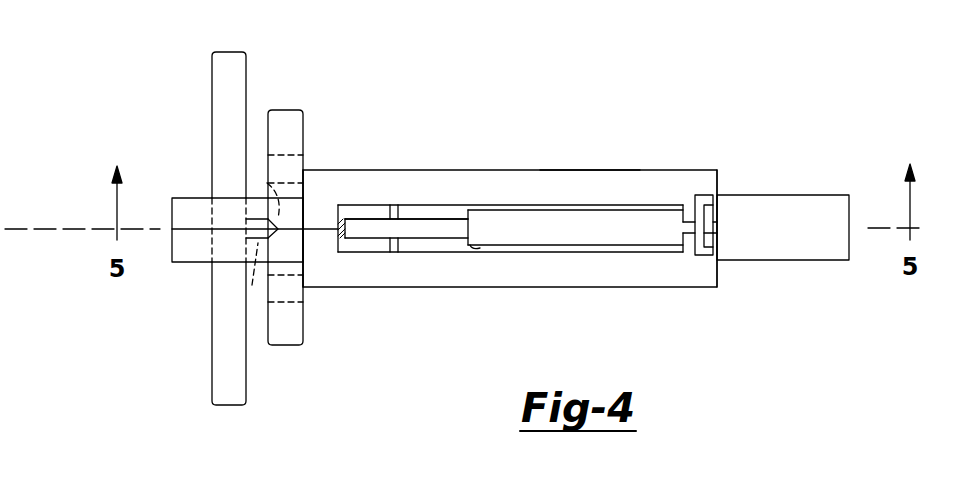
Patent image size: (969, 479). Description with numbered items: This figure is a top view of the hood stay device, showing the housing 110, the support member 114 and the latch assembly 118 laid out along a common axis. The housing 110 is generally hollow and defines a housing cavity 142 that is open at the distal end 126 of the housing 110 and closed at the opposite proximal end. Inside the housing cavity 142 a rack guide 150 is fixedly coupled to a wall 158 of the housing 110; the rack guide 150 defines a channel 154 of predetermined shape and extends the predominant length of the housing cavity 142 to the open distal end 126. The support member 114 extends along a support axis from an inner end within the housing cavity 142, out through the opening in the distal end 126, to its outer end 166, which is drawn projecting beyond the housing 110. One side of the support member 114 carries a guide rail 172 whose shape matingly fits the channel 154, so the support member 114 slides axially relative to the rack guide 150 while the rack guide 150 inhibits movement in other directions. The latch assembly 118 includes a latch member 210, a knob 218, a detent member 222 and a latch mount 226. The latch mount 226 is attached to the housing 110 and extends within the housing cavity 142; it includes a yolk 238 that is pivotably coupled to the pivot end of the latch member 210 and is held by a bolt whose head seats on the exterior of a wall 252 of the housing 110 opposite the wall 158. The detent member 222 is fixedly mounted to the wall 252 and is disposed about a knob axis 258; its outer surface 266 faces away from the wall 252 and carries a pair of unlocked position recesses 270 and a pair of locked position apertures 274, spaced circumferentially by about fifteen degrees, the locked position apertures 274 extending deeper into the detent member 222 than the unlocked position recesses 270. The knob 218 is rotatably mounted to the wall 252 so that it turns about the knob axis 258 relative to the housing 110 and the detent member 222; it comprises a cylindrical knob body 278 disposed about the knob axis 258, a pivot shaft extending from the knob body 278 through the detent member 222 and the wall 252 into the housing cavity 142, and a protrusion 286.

The housing 110 is at (500, 168).
The support member 114 is at (653, 220).
The latch assembly 118 is at (178, 108).
The distal end 126 is at (583, 183).
The housing cavity 142 is at (458, 203).
The rack guide 150 is at (690, 220).
The channel 154 is at (703, 197).
The wall 158 is at (718, 278).
The outer end 166 is at (570, 232).
The guide rail 172 is at (705, 237).
The latch member 210 is at (425, 231).
The knob 218 is at (236, 67).
The detent member 222 is at (278, 345).
The latch mount 226 is at (369, 253).
The yolk 238 is at (375, 213).
The wall 252 is at (340, 183).
The knob axis 258 is at (75, 230).
The outer surface 266 is at (259, 118).
The unlocked position recess 270 is at (268, 183).
The locked position aperture 274 is at (285, 153).
The knob body 278 is at (245, 380).
The protrusion 286 is at (252, 285).